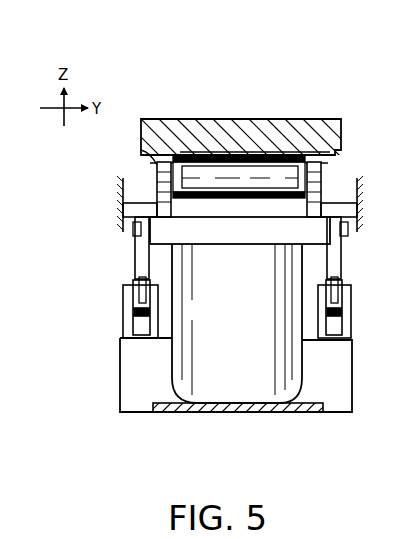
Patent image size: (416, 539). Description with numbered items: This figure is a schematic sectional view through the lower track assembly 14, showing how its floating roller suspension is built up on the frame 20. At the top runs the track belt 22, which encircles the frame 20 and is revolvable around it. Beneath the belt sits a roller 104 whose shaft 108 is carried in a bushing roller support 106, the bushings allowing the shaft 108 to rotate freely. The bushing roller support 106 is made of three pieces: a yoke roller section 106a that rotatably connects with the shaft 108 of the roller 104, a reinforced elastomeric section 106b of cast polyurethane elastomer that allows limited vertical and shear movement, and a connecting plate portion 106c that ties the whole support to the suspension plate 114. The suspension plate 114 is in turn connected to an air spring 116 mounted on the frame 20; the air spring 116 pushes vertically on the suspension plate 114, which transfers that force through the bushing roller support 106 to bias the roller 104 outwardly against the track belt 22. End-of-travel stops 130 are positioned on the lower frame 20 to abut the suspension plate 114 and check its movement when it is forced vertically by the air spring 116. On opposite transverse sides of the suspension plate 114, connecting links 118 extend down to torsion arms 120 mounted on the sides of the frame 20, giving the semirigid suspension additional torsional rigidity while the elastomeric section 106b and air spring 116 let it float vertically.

The lower track assembly 14 is at (340, 106).
The track belt 22 is at (208, 132).
The roller 104 is at (283, 132).
The bushing roller support 106 is at (138, 181).
The yoke roller section 106a is at (341, 150).
The reinforced elastomeric section 106b is at (320, 205).
The connecting plate portion 106c is at (320, 202).
The shaft 108 is at (156, 166).
The end-of-travel stop 130 is at (125, 205).
The suspension plate 114 is at (303, 246).
The air spring 116 is at (246, 353).
The connecting link 118 is at (135, 254).
The torsion arm 120 is at (140, 318).
The frame 20 is at (236, 407).